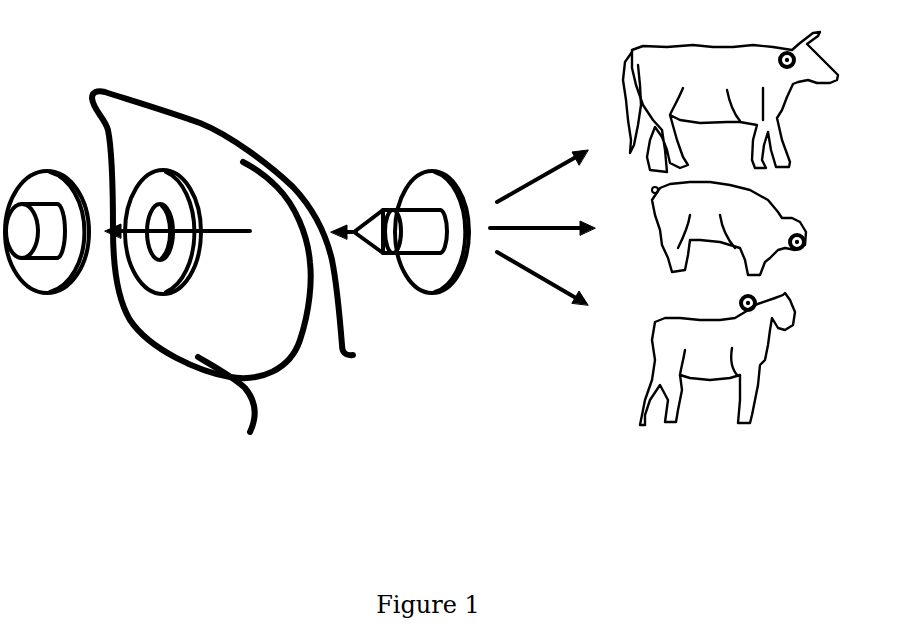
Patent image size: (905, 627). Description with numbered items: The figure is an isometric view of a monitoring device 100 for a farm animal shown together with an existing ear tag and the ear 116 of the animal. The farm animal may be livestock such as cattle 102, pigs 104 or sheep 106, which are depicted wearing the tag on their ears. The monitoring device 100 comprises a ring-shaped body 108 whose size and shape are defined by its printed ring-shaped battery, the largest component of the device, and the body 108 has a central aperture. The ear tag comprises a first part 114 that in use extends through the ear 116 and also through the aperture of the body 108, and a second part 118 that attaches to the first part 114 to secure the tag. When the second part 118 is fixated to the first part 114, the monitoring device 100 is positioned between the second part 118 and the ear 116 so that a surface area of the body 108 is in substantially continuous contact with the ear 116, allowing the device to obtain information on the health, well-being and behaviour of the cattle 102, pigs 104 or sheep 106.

The monitoring device 100 is at (194, 175).
The cattle 102 is at (758, 70).
The pigs 104 is at (712, 202).
The sheep 106 is at (663, 342).
The body 108 is at (152, 215).
The first part 114 is at (430, 145).
The ear 116 is at (243, 140).
The second part 118 is at (48, 187).